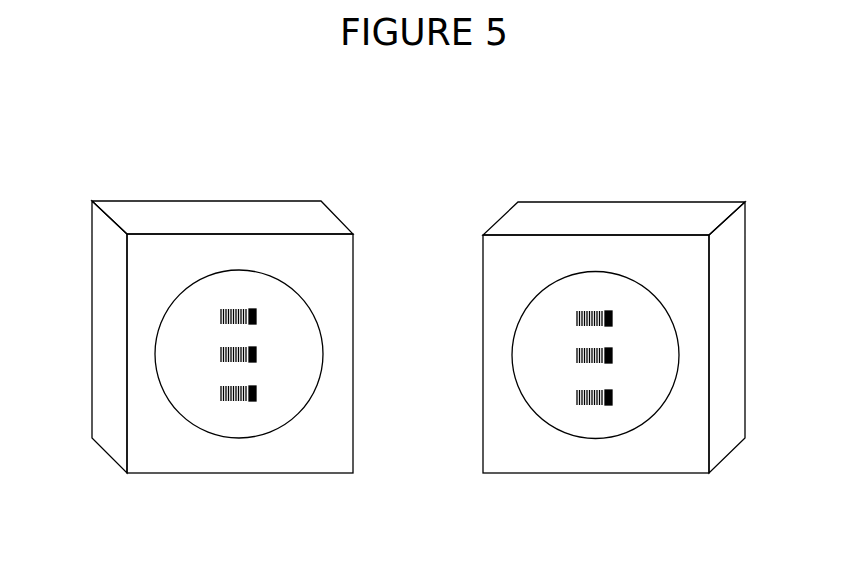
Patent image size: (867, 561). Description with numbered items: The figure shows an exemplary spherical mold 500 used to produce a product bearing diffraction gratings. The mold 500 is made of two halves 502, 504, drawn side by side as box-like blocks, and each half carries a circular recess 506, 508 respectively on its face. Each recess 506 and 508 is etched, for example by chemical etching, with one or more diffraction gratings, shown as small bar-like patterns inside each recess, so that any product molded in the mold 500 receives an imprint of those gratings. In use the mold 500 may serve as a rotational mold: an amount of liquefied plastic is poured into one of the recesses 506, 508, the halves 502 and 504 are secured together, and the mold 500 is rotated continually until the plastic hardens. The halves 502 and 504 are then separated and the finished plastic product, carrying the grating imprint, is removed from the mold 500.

The spherical mold 500 is at (112, 117).
The mold half 502 is at (130, 199).
The mold half 504 is at (548, 200).
The recess 506 is at (200, 293).
The recess 508 is at (562, 295).